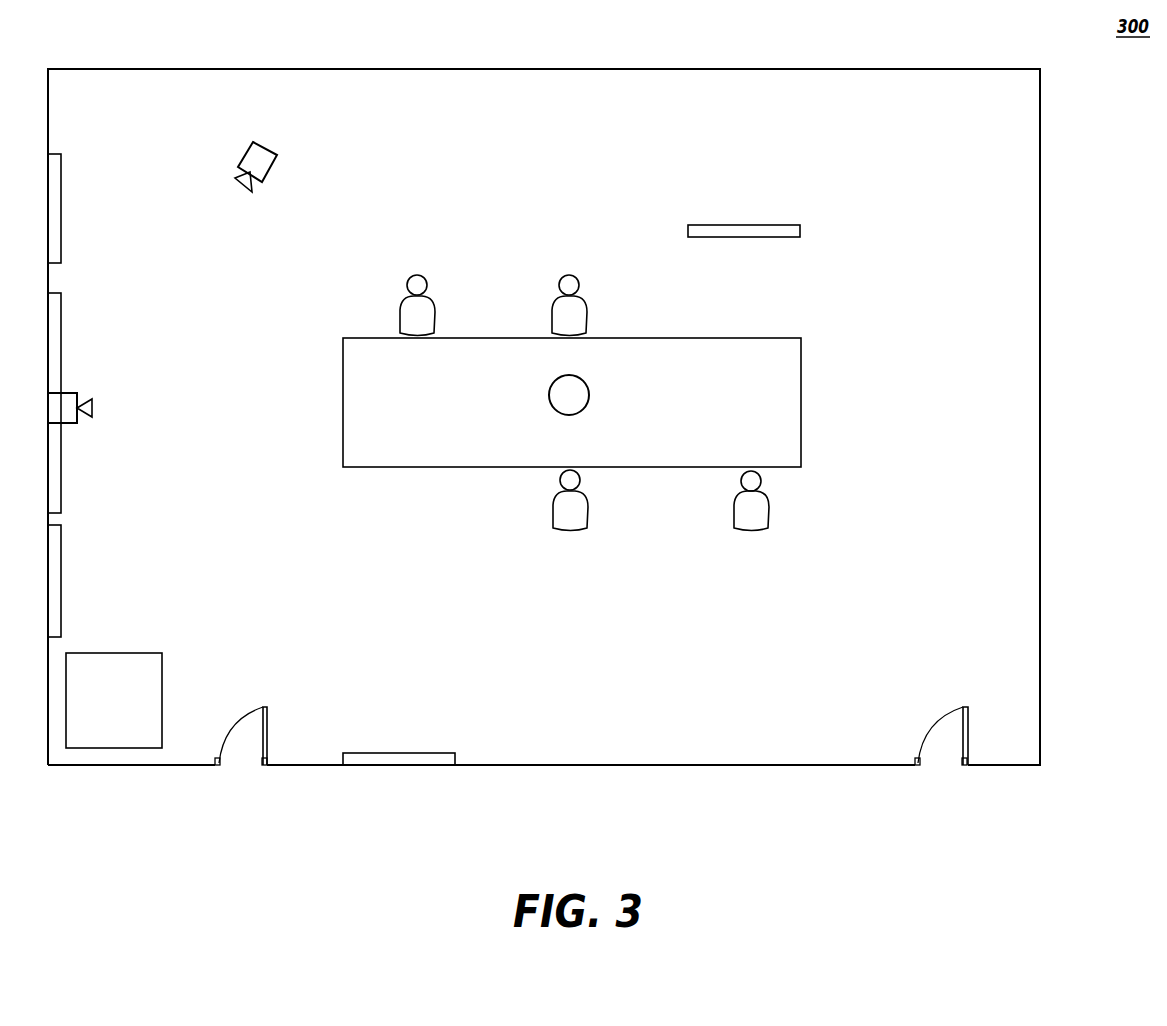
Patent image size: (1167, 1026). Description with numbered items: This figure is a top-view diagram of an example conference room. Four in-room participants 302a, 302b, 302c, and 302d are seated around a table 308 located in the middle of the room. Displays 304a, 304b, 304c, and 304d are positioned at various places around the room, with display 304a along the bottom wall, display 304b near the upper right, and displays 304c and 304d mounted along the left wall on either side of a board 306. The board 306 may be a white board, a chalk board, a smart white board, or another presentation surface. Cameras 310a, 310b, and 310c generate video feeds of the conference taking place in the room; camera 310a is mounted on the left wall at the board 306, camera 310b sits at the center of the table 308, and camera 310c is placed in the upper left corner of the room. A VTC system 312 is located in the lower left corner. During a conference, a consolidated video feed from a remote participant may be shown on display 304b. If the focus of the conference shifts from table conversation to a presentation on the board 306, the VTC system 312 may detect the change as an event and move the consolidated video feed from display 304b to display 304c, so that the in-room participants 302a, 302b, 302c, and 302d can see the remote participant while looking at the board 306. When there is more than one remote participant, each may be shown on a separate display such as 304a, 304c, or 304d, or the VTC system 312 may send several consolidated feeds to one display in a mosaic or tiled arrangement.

The participant 302a is at (426, 278).
The participant 302b is at (578, 278).
The participant 302c is at (589, 512).
The participant 302d is at (765, 510).
The display 304a is at (390, 752).
The display 304b is at (770, 238).
The display 304c is at (56, 573).
The display 304d is at (56, 194).
The board 306 is at (56, 491).
The table 308 is at (801, 352).
The camera 310a is at (79, 393).
The camera 310b is at (588, 387).
The camera 310c is at (270, 158).
The VTC system 312 is at (114, 700).